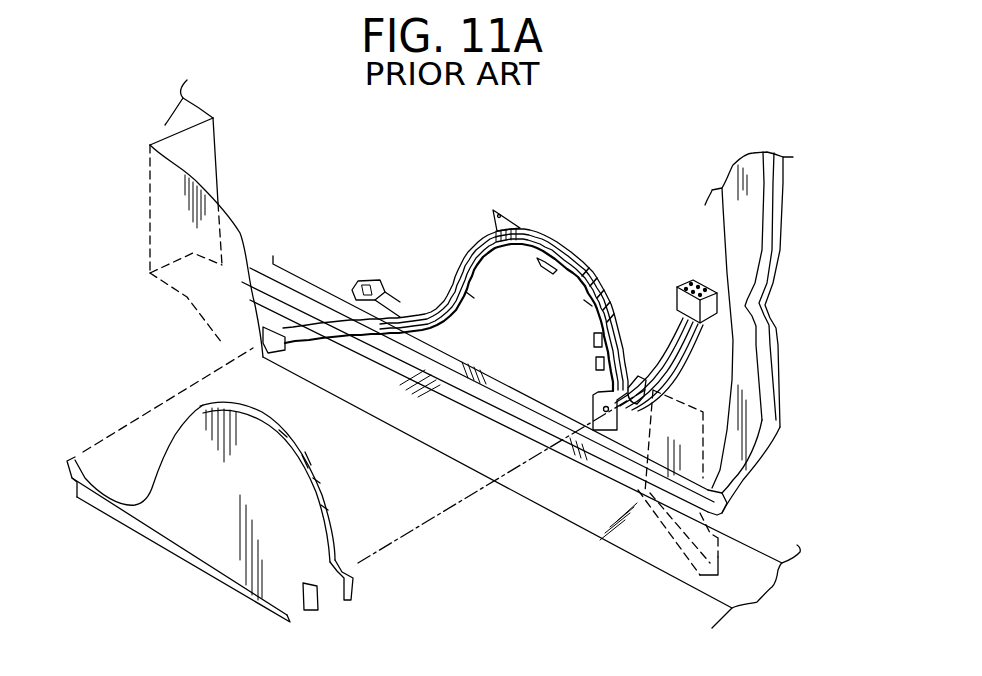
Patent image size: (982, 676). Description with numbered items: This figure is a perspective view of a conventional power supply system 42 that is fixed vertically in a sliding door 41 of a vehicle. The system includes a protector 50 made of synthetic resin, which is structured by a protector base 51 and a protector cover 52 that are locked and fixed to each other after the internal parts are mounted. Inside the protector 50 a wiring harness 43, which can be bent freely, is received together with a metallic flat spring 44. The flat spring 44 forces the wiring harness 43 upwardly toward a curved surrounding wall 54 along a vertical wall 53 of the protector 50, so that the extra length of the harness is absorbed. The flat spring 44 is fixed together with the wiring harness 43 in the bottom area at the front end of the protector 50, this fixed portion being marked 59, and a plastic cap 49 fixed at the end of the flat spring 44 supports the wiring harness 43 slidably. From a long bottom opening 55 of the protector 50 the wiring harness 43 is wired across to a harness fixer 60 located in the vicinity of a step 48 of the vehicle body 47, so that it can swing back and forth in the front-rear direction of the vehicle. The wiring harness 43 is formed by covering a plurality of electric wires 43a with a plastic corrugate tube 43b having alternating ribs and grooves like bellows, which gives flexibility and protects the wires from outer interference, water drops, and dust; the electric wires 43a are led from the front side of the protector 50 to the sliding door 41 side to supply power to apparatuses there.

The sliding door 41 is at (777, 433).
The power supply system 42 is at (500, 356).
The wiring harness 43 is at (470, 295).
The electric wires 43a is at (667, 355).
The corrugate tube 43b is at (595, 276).
The flat spring 44 is at (581, 303).
The vehicle body 47 is at (216, 160).
The step 48 is at (498, 450).
The cap 49 is at (540, 260).
The protector 50 is at (418, 660).
The protector base 51 is at (495, 468).
The protector cover 52 is at (328, 487).
The vertical wall 53 is at (233, 500).
The curved surrounding wall 54 is at (533, 230).
The bottom opening 55 is at (458, 358).
The fixed portion of the flat spring 59 is at (600, 377).
The harness fixer 60 is at (274, 333).